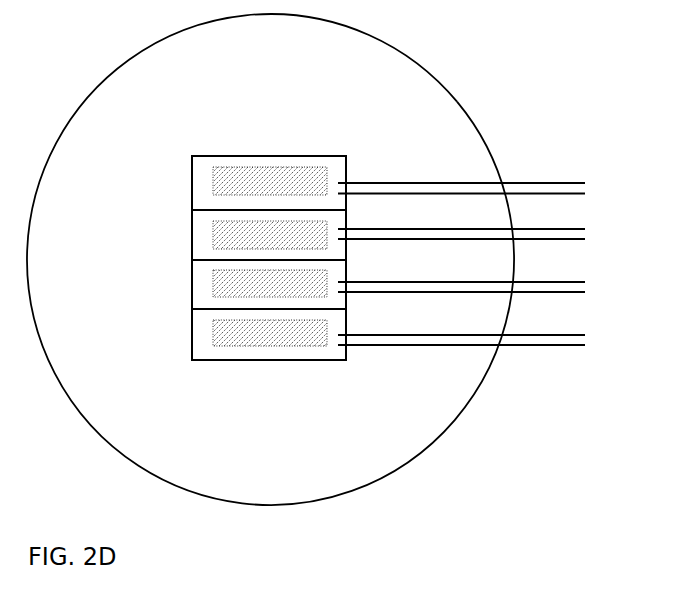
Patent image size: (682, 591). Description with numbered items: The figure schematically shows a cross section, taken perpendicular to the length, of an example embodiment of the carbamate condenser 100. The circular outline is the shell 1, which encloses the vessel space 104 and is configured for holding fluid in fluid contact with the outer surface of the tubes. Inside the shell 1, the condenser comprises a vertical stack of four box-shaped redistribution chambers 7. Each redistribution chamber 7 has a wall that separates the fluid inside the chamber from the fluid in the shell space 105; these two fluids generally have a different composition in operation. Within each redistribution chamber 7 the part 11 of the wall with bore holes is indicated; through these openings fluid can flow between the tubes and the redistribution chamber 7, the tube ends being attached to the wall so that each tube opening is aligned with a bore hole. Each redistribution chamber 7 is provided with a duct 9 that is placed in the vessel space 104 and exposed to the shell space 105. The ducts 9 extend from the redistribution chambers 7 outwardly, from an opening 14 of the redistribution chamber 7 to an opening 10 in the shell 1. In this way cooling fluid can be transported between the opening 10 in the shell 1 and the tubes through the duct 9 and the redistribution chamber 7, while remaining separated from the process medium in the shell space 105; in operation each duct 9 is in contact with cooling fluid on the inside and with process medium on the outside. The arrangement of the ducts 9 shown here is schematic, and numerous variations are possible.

The carbamate condenser 100 is at (132, 43).
The shell 1 is at (436, 73).
The vessel space 104 is at (515, 147).
The shell space 105 is at (481, 149).
The redistribution chamber 7 is at (220, 186).
The part of the wall with bore holes 11 is at (192, 200).
The duct 9 is at (577, 184).
The opening of the redistribution chamber 14 is at (348, 340).
The opening in the shell 10 is at (500, 346).